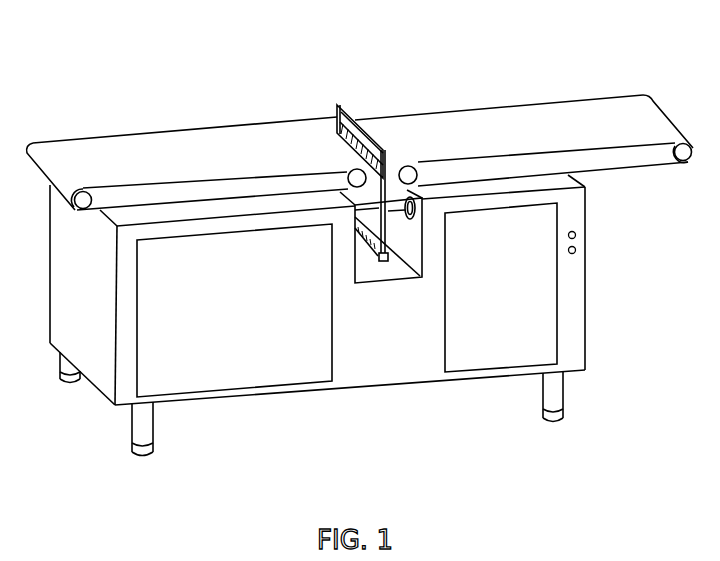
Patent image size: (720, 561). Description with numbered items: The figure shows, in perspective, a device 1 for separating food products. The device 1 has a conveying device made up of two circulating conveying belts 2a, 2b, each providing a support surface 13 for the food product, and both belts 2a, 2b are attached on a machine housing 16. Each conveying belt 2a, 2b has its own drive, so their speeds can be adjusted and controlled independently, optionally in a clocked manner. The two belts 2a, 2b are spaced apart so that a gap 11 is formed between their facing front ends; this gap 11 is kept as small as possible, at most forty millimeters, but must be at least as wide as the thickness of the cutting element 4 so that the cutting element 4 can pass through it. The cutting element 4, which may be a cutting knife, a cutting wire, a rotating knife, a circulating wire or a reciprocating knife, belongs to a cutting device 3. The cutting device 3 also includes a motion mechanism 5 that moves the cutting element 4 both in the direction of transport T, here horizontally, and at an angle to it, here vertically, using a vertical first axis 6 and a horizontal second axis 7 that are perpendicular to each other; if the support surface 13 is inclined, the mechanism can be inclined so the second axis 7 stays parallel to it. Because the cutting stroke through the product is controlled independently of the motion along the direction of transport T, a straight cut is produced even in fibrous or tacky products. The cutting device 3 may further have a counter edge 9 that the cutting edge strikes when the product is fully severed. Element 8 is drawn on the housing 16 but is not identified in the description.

The device 1 is at (163, 73).
The conveying belt 2a is at (560, 98).
The conveying belt 2b is at (216, 128).
The cutting device 3 is at (327, 98).
The cutting element 4 is at (347, 109).
The motion mechanism 5 is at (363, 252).
The first axis 6 is at (392, 262).
The second axis 7 is at (445, 227).
The control buttons 8 is at (585, 237).
The counter edge 9 is at (337, 128).
The gap 11 is at (398, 167).
The support surface 13 is at (160, 152).
The machine housing 16 is at (580, 312).
The direction of transport T is at (455, 56).